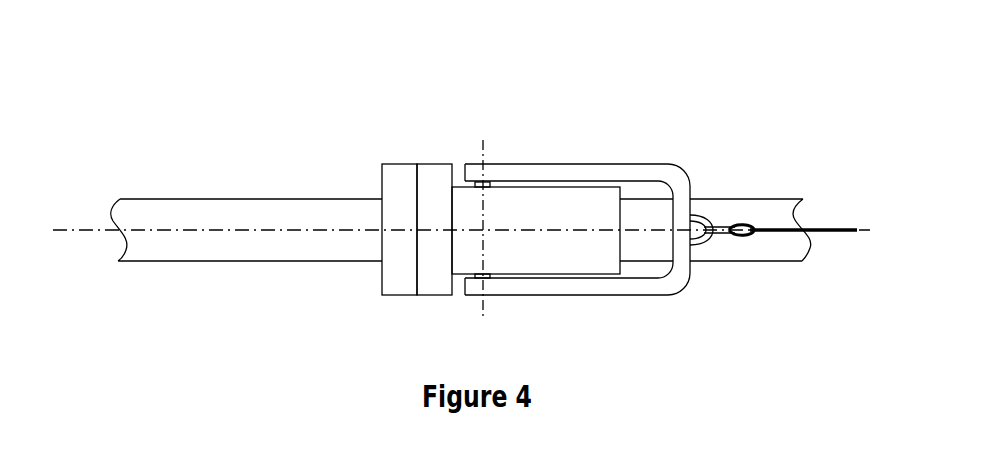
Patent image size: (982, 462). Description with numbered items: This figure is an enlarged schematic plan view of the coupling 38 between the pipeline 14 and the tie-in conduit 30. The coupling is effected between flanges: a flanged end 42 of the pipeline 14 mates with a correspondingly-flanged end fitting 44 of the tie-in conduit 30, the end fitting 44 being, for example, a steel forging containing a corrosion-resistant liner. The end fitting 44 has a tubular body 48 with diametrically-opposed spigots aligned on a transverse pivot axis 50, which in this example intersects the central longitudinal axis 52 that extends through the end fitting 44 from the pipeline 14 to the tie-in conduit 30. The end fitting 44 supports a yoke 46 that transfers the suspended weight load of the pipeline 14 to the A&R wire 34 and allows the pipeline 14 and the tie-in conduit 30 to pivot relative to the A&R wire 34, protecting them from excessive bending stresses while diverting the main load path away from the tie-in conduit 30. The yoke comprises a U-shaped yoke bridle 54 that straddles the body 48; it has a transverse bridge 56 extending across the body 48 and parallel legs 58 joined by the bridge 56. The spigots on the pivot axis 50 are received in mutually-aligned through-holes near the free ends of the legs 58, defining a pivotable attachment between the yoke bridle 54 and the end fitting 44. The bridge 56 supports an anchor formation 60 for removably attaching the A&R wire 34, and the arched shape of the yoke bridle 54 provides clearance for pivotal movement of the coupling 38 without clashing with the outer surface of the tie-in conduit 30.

The pipeline 14 is at (178, 212).
The tie-in conduit 30 is at (747, 208).
The A&R wire 34 is at (823, 232).
The coupling 38 is at (549, 185).
The flanged end 42 is at (398, 285).
The end fitting 44 is at (435, 170).
The yoke 46 is at (599, 218).
The tubular body 48 is at (579, 198).
The pivot axis 50 is at (485, 302).
The central longitudinal axis 52 is at (87, 234).
The yoke bridle 54 is at (672, 280).
The bridge 56 is at (683, 192).
The legs 58 is at (644, 173).
The anchor formation 60 is at (703, 242).